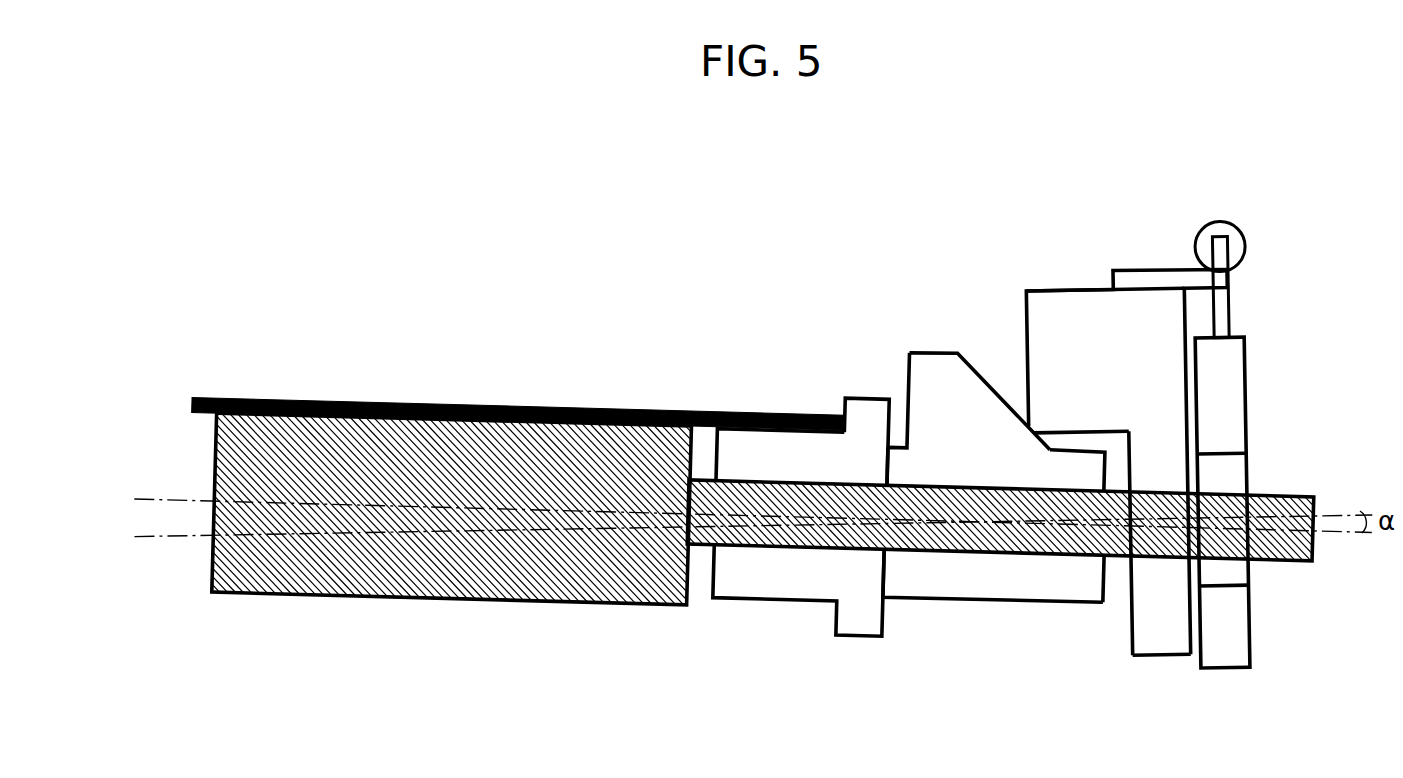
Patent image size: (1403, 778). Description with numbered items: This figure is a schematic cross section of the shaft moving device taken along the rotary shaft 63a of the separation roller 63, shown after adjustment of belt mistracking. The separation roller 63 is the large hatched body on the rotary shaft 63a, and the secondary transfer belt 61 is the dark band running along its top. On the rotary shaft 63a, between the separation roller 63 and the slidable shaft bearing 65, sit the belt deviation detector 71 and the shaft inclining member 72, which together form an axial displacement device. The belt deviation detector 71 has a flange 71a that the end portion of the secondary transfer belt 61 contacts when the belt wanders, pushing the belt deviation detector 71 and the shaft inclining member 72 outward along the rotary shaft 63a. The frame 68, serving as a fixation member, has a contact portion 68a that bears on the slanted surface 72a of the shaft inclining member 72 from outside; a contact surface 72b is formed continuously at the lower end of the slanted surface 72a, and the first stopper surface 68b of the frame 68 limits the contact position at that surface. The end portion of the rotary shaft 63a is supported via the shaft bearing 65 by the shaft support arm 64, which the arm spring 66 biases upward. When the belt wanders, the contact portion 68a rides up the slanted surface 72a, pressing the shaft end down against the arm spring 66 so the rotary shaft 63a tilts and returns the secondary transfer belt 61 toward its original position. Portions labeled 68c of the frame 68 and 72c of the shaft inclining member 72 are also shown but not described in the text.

The secondary transfer belt 61 is at (397, 400).
The separation roller 63 is at (350, 601).
The rotary shaft 63a is at (1283, 564).
The shaft support arm 64 is at (1247, 372).
The shaft bearing 65 is at (1247, 468).
The arm spring 66 is at (1248, 248).
The frame 68 is at (1130, 508).
The contact portion 68a is at (1040, 431).
The first stopper surface 68b is at (1128, 432).
The bottom of bracket 68c is at (1135, 656).
The belt deviation detector 71 is at (801, 509).
The flange 71a is at (862, 398).
The shaft inclining member 72 is at (1002, 479).
The slanted surface 72a is at (962, 352).
The contact surface 72b is at (1072, 432).
The end portion of second collar 72c is at (1105, 601).